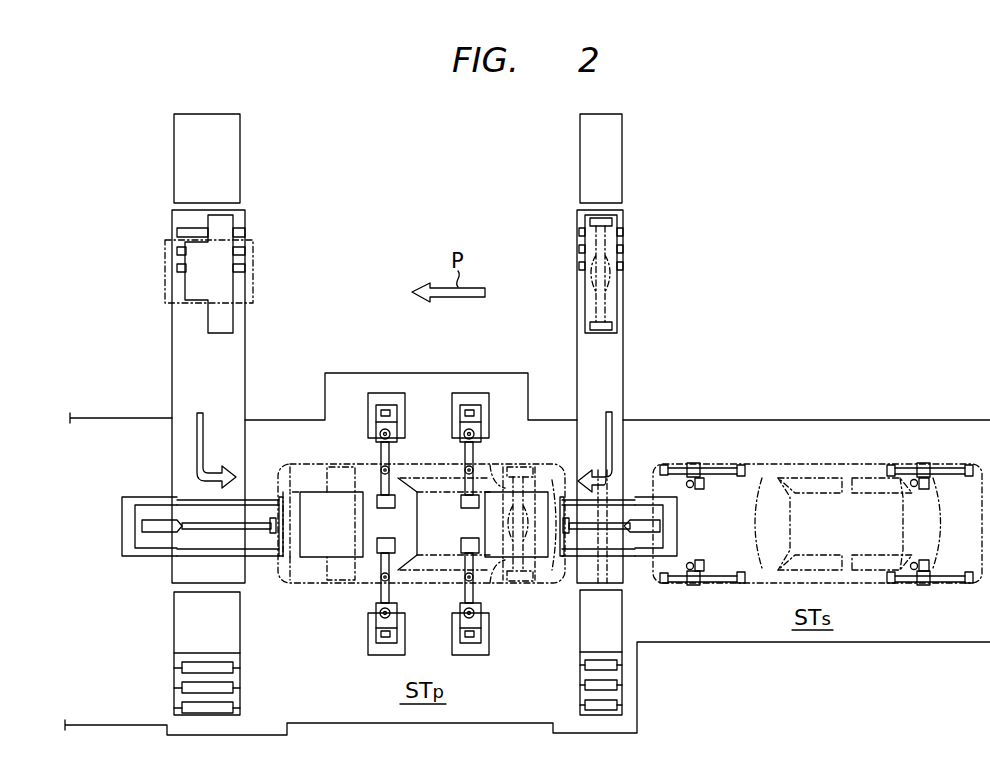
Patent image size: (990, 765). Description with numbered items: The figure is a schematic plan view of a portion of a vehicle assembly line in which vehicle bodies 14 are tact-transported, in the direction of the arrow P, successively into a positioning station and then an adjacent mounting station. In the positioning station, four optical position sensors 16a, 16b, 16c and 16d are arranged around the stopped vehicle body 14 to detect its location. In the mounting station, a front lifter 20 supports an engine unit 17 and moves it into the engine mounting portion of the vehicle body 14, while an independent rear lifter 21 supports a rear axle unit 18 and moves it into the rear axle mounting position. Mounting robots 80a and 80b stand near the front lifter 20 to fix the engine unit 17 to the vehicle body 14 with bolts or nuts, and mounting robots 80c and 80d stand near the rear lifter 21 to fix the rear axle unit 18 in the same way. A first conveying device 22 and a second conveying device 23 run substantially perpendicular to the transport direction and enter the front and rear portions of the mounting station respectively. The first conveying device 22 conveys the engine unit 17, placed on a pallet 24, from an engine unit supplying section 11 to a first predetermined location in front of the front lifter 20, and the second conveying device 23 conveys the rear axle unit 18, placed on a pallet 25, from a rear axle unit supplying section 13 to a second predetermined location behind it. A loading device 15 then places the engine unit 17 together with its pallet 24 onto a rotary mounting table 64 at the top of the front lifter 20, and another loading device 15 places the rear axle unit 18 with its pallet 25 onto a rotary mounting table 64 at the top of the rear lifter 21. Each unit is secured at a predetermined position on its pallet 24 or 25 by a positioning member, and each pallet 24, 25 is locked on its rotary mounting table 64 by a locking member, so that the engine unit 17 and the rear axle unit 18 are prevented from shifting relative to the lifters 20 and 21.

The engine unit supplying section 11 is at (237, 122).
The rear axle unit supplying section 13 is at (623, 122).
The vehicle body 14 is at (402, 466).
The loading device 15 is at (160, 561).
The optical position sensor 16a is at (699, 563).
The optical position sensor 16b is at (698, 487).
The optical position sensor 16c is at (932, 566).
The optical position sensor 16d is at (930, 484).
The engine unit 17 is at (165, 274).
The rear axle unit 18 is at (605, 296).
The front lifter 20 is at (300, 560).
The rear lifter 21 is at (548, 563).
The first conveying device 22 is at (172, 352).
The second conveying device 23 is at (620, 351).
The pallet 24 is at (235, 221).
The pallet 25 is at (620, 222).
The rotary mounting table 64 is at (312, 492).
The mounting robot 80a is at (366, 627).
The mounting robot 80b is at (368, 421).
The mounting robot 80c is at (490, 627).
The mounting robot 80d is at (489, 421).